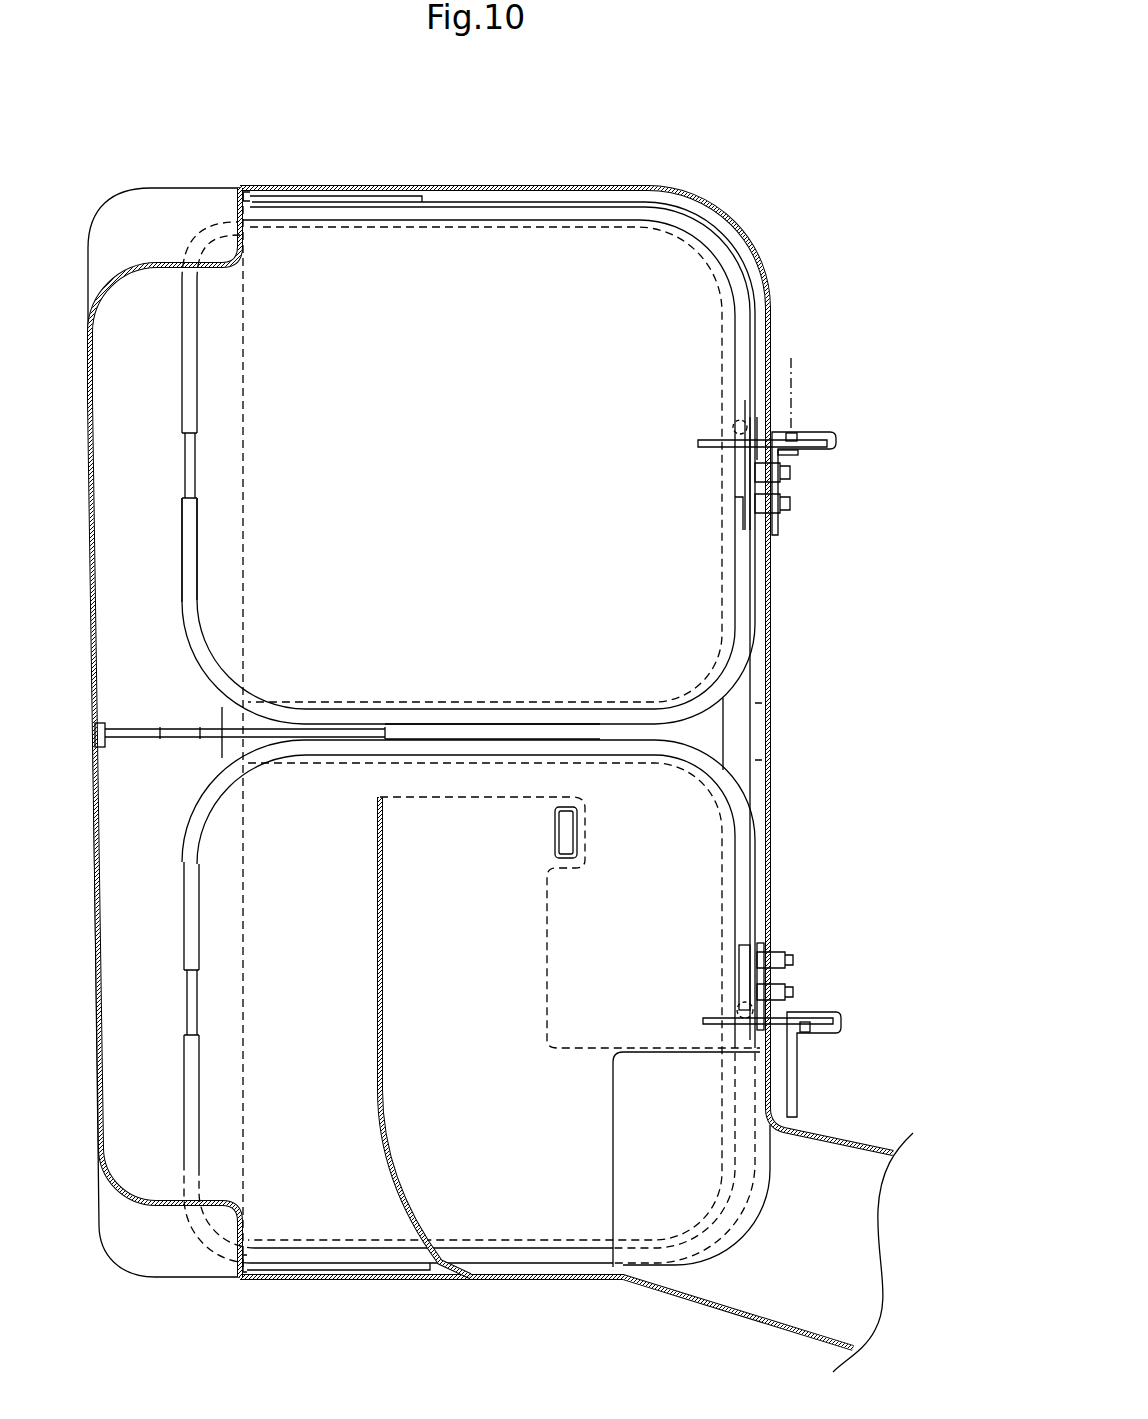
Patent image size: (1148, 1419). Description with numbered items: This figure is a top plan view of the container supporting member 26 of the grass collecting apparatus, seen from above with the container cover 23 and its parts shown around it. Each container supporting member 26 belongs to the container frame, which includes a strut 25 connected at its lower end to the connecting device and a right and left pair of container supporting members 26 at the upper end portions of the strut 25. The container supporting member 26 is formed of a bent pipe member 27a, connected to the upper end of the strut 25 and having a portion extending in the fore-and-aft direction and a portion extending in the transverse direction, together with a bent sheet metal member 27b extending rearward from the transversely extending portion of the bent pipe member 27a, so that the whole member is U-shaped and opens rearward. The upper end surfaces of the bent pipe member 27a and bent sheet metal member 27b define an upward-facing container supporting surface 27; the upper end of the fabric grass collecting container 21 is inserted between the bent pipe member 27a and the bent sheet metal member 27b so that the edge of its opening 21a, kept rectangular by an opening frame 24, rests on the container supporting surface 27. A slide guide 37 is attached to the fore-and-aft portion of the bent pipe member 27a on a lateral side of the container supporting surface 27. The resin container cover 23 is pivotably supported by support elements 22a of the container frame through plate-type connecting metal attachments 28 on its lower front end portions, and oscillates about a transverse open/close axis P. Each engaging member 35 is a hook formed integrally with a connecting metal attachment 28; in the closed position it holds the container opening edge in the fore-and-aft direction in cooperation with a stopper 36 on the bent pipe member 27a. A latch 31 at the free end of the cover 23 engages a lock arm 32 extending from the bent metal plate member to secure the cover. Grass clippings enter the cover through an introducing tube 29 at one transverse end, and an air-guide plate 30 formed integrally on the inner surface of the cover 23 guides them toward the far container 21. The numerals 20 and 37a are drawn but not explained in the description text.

The door 20 is at (808, 311).
The grass collecting container 21 is at (180, 569).
The opening 21a is at (182, 378).
The support element 22a is at (805, 450).
The container cover 23 is at (440, 186).
The opening frame 24 is at (185, 467).
The strut 25 is at (723, 421).
The container supporting member 26 is at (718, 545).
The container supporting surface 27 is at (505, 190).
The bent pipe member 27a is at (740, 738).
The bent sheet metal member 27b is at (562, 734).
The connecting metal attachment 28 is at (812, 431).
The introducing tube 29 is at (742, 1282).
The air-guide plate 30 is at (378, 969).
The latch 31 is at (104, 750).
The lock arm 32 is at (142, 726).
The engaging member 35 is at (698, 443).
The stopper 36 is at (757, 480).
The slide guide 37 is at (395, 190).
The end of weather strip 37a is at (367, 202).
The open/close axis P is at (788, 380).